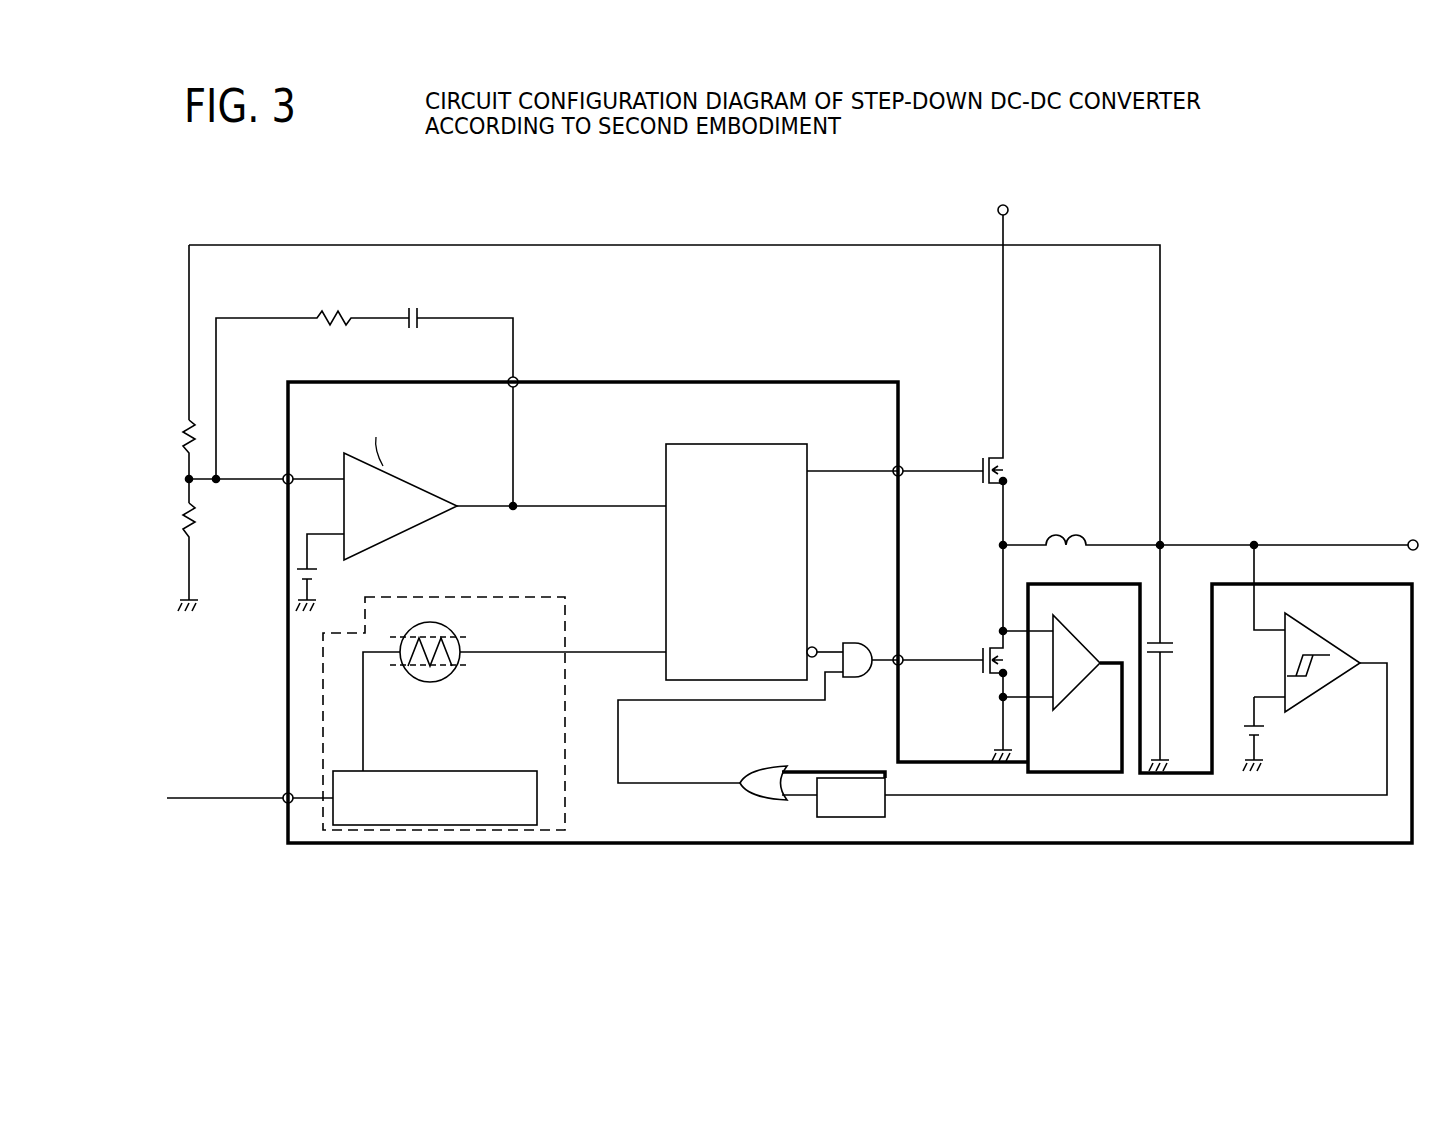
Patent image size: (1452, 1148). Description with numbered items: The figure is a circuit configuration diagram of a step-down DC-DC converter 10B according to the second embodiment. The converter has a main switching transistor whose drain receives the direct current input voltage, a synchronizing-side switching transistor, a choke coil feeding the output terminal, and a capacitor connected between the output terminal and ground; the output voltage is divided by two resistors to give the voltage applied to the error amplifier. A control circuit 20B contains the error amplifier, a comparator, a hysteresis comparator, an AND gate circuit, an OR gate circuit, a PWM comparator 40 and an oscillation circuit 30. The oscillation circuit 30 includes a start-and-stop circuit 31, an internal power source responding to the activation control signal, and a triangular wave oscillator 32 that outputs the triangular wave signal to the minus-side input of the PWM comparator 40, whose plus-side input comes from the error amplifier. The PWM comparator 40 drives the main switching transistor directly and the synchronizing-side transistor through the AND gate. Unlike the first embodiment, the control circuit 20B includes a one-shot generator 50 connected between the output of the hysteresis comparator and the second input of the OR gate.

The step-down DC-DC converter 10B is at (1141, 198).
The control circuit 20B is at (765, 845).
The oscillation circuit 30 is at (520, 830).
The start-and-stop circuit 31 is at (417, 825).
The triangular wave oscillator 32 is at (432, 622).
The PWM comparator 40 is at (807, 520).
The one-shot generator 50 is at (858, 817).